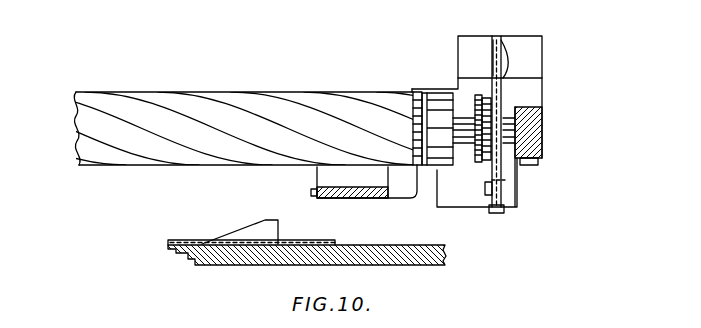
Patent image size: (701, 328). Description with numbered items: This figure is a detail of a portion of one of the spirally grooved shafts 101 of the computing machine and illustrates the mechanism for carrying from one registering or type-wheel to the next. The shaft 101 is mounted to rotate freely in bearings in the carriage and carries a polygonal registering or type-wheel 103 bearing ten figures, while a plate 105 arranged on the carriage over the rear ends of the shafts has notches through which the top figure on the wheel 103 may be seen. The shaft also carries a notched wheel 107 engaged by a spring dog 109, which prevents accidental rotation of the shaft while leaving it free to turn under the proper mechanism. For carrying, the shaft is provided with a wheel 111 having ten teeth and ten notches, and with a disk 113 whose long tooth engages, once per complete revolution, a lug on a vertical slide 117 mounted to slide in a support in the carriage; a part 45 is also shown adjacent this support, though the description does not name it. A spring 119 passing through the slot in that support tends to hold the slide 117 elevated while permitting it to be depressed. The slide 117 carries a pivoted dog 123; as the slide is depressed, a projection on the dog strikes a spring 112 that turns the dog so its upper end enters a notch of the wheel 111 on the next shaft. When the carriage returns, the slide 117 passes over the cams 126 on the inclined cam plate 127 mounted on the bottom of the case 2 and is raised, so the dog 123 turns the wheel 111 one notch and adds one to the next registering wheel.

The case 2 is at (265, 256).
The bearing block 45 is at (542, 140).
The spirally grooved shaft 101 is at (214, 97).
The registering or type-wheel 103 is at (437, 96).
The plate 105 is at (416, 89).
The notched wheel 107 is at (413, 92).
The spring dog 109 is at (410, 199).
The wheel 111 is at (492, 97).
The spring 112 is at (491, 208).
The disk 113 is at (480, 164).
The vertical slide 117 is at (496, 63).
The spring 119 is at (506, 67).
The pivoted dog 123 is at (491, 200).
The cam 126 is at (242, 233).
The inclined cam plate 127 is at (174, 241).